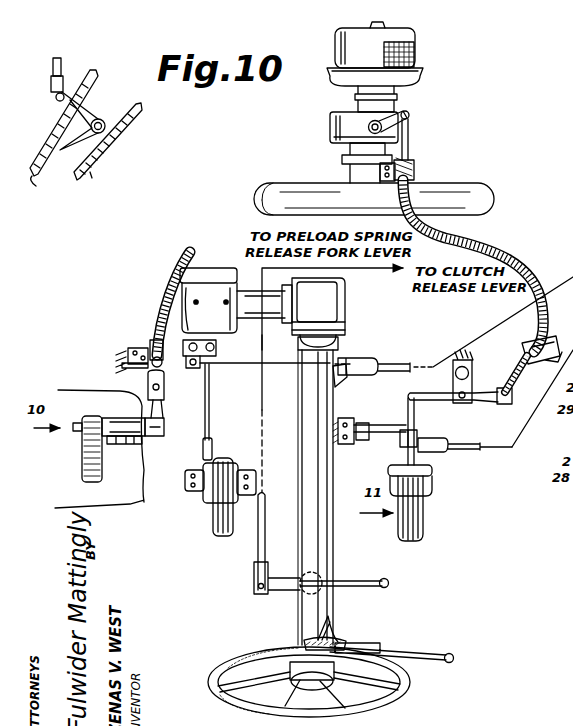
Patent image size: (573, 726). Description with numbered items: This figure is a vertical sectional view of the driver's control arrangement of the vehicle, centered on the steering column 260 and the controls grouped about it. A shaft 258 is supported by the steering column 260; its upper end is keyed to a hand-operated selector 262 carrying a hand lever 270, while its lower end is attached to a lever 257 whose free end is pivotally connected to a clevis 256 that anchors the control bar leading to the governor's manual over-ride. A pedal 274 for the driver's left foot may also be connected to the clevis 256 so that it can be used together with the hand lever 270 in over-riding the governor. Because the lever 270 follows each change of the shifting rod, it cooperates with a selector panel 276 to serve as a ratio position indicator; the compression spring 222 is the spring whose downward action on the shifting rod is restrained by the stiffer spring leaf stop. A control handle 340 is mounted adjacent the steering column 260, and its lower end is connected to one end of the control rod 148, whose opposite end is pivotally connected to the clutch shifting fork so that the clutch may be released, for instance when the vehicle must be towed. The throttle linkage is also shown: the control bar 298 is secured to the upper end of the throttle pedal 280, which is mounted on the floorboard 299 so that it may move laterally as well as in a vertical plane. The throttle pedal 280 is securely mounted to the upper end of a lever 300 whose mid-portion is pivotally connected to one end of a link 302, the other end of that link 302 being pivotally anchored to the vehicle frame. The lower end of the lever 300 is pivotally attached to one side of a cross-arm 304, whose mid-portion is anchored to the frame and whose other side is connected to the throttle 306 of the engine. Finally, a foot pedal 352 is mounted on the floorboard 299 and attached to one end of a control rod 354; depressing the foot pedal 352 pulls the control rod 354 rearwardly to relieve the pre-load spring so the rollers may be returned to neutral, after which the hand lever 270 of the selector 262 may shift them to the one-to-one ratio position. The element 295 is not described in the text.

The control rod 148 is at (256, 546).
The compression spring 222 is at (563, 523).
The clevis 256 is at (372, 358).
The lever 257 is at (352, 382).
The shaft 258 is at (334, 562).
The steering column 260 is at (318, 541).
The hand-operated selector 262 is at (350, 645).
The hand lever 270 is at (448, 652).
The pedal 274 is at (126, 138).
The selector panel 276 is at (332, 622).
The throttle pedal 280 is at (413, 542).
The link 295 is at (572, 434).
The control bar 298 is at (465, 450).
The floorboard 299 is at (78, 392).
The lever 300 is at (400, 442).
The link 302 is at (356, 423).
The cross-arm 304 is at (444, 404).
The throttle 306 is at (376, 120).
The control handle 340 is at (389, 583).
The foot pedal 352 is at (80, 466).
The control rod 354 is at (62, 68).